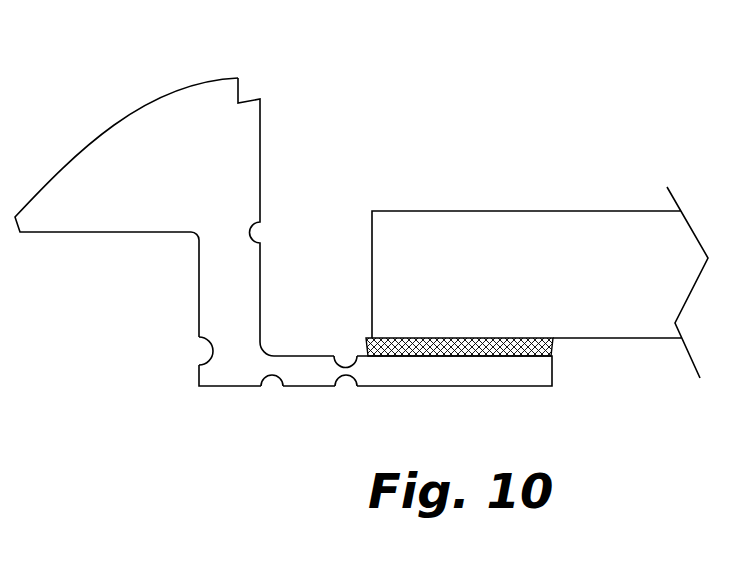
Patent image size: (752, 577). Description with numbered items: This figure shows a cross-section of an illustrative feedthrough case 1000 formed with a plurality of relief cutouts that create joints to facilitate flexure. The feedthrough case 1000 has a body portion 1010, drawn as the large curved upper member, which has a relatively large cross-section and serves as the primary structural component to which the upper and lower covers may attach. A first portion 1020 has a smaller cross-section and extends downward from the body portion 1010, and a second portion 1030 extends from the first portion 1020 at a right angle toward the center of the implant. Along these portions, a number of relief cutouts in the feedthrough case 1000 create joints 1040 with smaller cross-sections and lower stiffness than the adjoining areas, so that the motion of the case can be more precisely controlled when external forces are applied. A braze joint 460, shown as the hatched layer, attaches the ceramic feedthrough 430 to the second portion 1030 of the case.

The feedthrough case 1000 is at (291, 88).
The body portion 1010 is at (127, 212).
The first portion 1020 is at (208, 317).
The second portion 1030 is at (317, 373).
The joints 1040 is at (347, 370).
The ceramic feedthrough 430 is at (578, 288).
The braze joint 460 is at (553, 350).